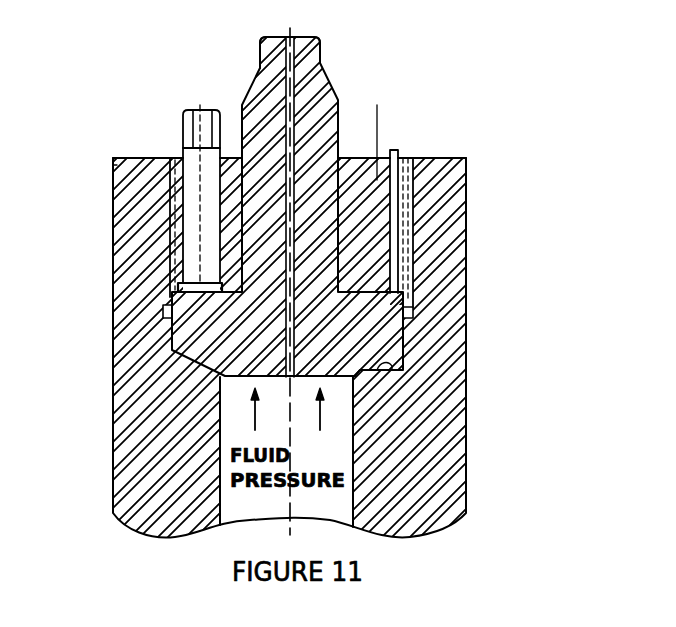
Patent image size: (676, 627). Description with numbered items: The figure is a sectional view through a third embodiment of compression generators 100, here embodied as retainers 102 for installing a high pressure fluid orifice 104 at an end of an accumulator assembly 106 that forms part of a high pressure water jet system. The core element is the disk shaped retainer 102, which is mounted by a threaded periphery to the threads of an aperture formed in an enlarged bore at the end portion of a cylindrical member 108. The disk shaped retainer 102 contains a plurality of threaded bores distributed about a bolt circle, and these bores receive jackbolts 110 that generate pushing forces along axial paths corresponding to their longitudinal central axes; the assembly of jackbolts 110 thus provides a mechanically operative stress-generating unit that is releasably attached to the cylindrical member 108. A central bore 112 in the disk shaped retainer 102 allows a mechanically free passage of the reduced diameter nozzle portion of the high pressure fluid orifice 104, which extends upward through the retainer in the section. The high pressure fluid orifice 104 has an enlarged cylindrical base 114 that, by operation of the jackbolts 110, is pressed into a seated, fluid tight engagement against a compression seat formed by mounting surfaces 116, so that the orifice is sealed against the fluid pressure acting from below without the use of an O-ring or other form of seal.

The compression generator 100 is at (388, 150).
The retainer 102 is at (237, 155).
The high pressure fluid orifice 104 is at (320, 53).
The accumulator assembly 106 is at (467, 150).
The cylindrical member 108 is at (467, 207).
The jackbolt 110 is at (182, 124).
The central bore 112 is at (336, 182).
The enlarged cylindrical base 114 is at (403, 357).
The mounting surfaces 116 is at (385, 363).